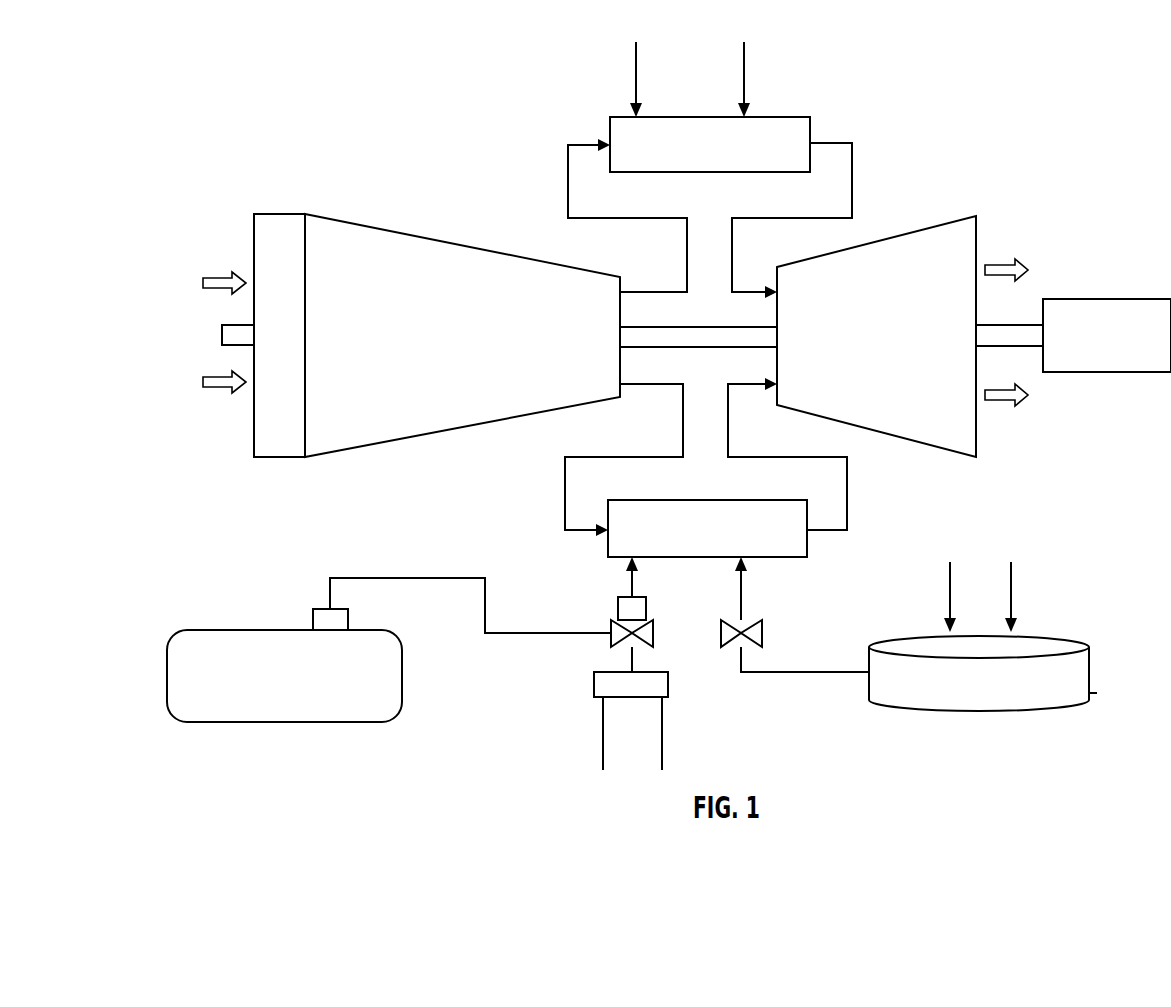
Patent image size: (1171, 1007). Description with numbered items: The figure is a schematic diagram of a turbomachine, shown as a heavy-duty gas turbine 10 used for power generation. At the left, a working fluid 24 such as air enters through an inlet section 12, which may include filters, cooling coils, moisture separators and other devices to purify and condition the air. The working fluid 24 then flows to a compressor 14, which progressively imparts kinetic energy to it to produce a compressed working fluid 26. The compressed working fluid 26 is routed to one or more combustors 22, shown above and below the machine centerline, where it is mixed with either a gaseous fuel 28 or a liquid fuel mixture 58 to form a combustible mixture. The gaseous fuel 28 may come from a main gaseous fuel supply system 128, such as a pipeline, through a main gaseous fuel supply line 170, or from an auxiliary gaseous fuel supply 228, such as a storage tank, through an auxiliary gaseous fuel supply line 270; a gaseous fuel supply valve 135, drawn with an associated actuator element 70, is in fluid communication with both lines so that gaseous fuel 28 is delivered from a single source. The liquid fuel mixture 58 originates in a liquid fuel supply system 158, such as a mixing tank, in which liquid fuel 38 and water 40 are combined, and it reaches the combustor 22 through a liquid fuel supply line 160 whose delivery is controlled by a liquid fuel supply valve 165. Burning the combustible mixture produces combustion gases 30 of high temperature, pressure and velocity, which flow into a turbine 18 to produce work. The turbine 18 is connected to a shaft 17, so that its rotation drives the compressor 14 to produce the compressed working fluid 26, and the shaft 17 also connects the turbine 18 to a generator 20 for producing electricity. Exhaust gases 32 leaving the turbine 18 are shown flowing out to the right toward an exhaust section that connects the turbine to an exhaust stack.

The gas turbine 10 is at (396, 138).
The inlet section 12 is at (288, 212).
The compressor 14 is at (502, 250).
The shaft 17 is at (1028, 322).
The turbine 18 is at (950, 218).
The generator 20 is at (1118, 297).
The combustor 22 is at (805, 115).
The working fluid 24 is at (228, 274).
The compressed working fluid 26 is at (566, 192).
The gaseous fuel 28 is at (634, 74).
The combustion gases 30 is at (855, 170).
The exhaust gases 32 is at (997, 264).
The liquid fuel 38 is at (948, 600).
The water 40 is at (1010, 600).
The liquid fuel mixture 58 is at (742, 73).
The valve actuator 70 is at (617, 610).
The main gaseous fuel supply system 128 is at (601, 745).
The gaseous fuel supply valve 135 is at (655, 635).
The liquid fuel supply system 158 is at (1097, 627).
The liquid fuel supply line 160 is at (777, 672).
The liquid fuel supply valve 165 is at (763, 635).
The main gaseous fuel supply line 170 is at (634, 660).
The auxiliary gaseous fuel supply 228 is at (220, 628).
The auxiliary gaseous fuel supply line 270 is at (400, 577).